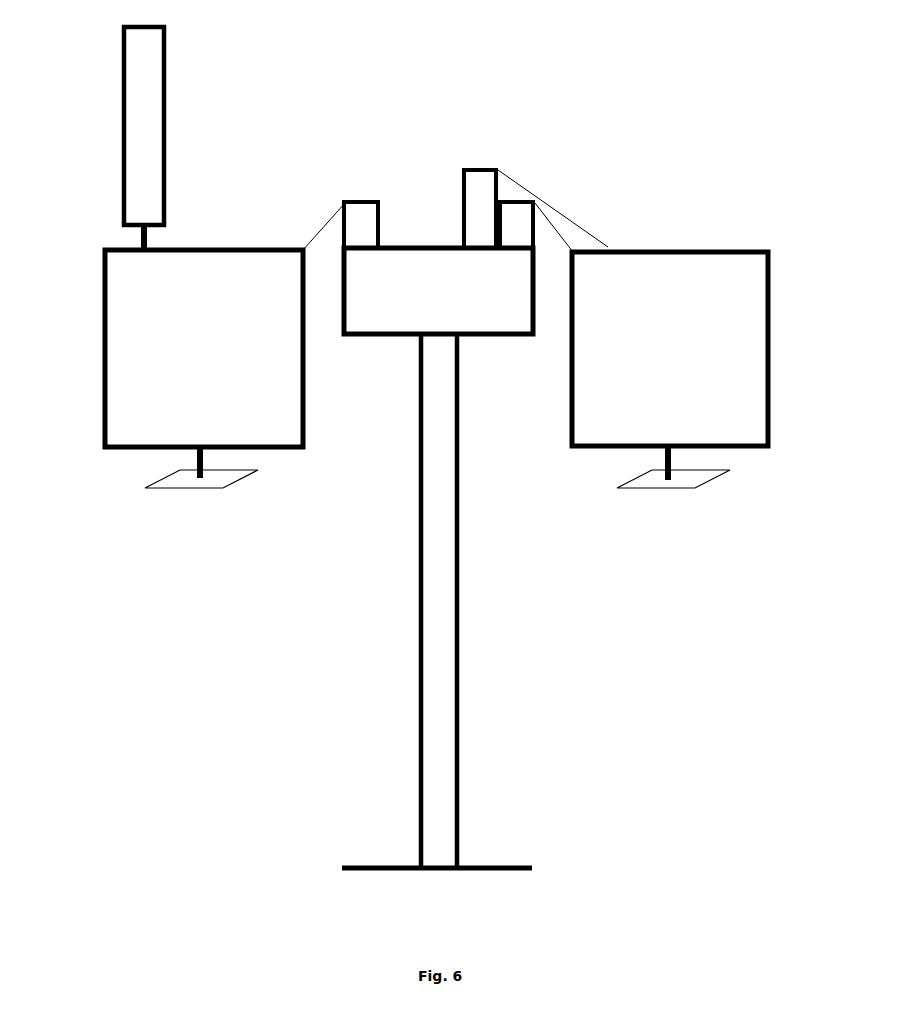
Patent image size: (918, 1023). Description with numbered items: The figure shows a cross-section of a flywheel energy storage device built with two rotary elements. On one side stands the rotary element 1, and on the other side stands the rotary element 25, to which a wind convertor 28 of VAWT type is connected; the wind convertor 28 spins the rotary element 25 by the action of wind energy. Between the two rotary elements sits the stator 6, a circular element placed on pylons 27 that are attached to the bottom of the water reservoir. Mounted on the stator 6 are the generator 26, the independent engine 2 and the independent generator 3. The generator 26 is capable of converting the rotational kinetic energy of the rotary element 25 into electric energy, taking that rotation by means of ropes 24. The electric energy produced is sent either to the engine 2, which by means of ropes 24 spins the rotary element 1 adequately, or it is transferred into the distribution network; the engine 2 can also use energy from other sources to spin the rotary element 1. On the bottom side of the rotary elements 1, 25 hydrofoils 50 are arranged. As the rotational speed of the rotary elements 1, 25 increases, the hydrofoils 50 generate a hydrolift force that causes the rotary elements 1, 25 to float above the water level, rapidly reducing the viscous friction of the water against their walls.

The rotary element 1 is at (773, 367).
The independent engine 2 is at (474, 166).
The independent generator 3 is at (516, 219).
The stator 6 is at (490, 339).
The ropes 24 is at (320, 226).
The rotary element 25 is at (102, 356).
The generator 26 is at (361, 198).
The pylons 27 is at (461, 673).
The wind convertor 28 is at (167, 80).
The hydrofoils 50 is at (142, 486).